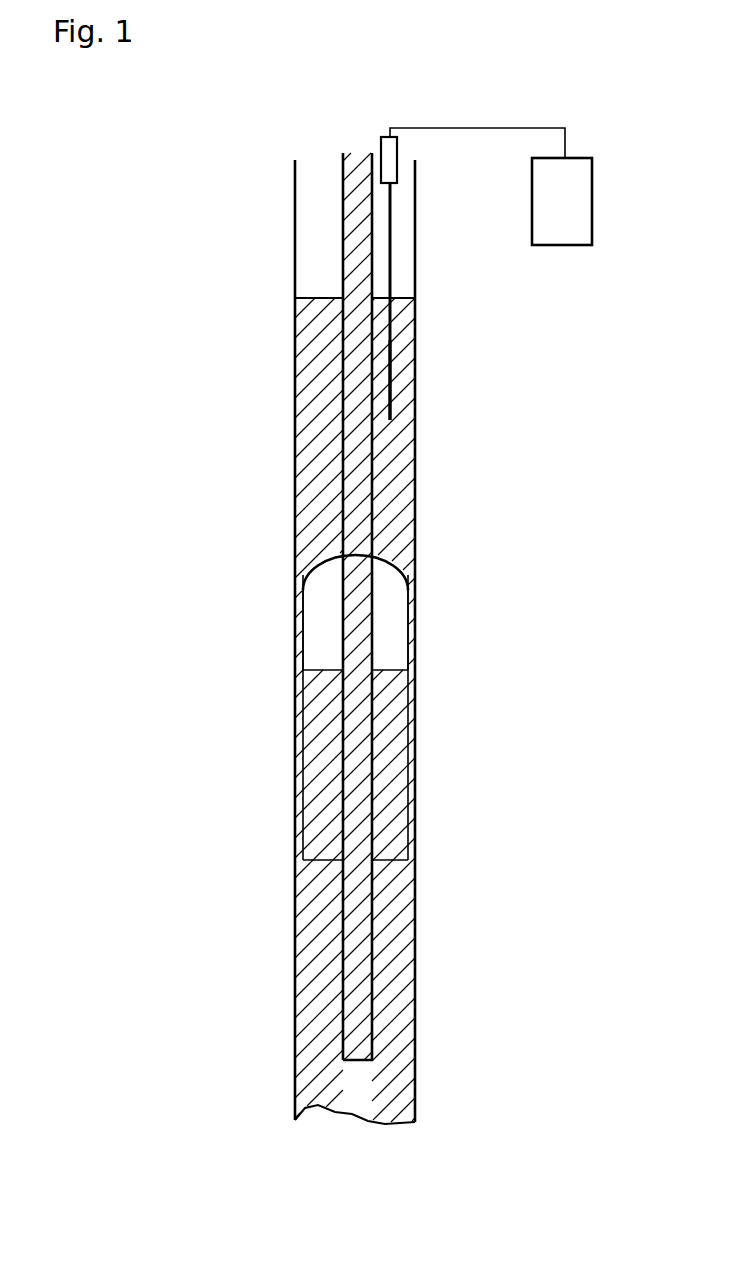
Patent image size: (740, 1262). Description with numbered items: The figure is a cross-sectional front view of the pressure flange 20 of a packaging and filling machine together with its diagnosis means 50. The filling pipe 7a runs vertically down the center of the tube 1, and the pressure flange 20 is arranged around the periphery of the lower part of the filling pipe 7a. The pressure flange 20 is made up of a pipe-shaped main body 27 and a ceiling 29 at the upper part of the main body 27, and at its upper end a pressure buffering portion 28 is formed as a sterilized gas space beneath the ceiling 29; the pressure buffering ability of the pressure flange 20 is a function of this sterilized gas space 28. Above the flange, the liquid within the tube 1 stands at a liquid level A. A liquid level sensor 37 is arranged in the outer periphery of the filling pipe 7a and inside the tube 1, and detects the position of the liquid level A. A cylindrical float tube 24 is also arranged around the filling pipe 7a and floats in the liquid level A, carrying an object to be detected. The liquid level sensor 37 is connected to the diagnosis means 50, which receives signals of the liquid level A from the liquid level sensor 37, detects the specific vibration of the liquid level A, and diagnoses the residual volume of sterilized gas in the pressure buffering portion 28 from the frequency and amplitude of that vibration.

The tube 1 is at (417, 920).
The filling pipe 7a is at (375, 493).
The liquid level A is at (312, 298).
The pressure flange 20 is at (415, 722).
The ceiling 29 is at (410, 573).
The pressure buffering portion 28 is at (387, 620).
The main body 27 is at (408, 772).
The liquid level sensor 37 is at (393, 262).
The float tube 24 is at (376, 356).
The diagnosis means 50 is at (562, 201).